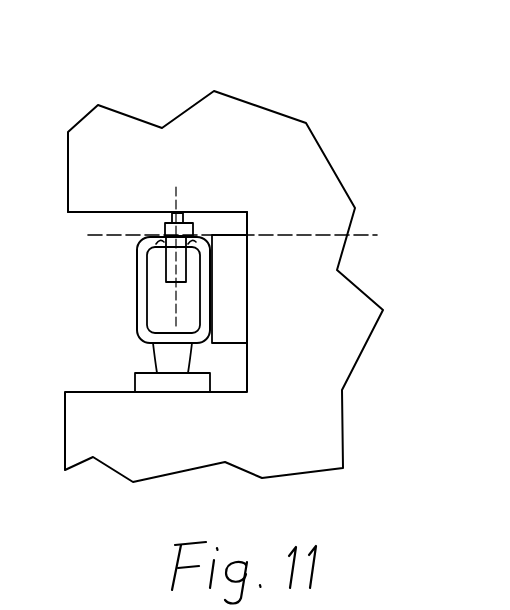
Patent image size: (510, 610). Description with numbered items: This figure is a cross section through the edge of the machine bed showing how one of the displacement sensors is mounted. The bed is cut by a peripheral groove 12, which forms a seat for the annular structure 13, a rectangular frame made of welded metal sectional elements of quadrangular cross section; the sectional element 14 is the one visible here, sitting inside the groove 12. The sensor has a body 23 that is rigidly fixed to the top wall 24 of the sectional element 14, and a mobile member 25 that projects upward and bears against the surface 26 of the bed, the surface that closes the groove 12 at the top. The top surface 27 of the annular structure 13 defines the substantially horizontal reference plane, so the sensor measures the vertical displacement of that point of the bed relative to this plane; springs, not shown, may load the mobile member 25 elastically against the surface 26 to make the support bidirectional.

The peripheral groove 12 is at (82, 382).
The annular structure 13 is at (137, 311).
The sectional element 14 is at (205, 307).
The body 23 is at (173, 247).
The top wall 24 is at (198, 236).
The mobile member 25 is at (178, 214).
The surface 26 is at (90, 215).
The top surface 27 is at (165, 224).